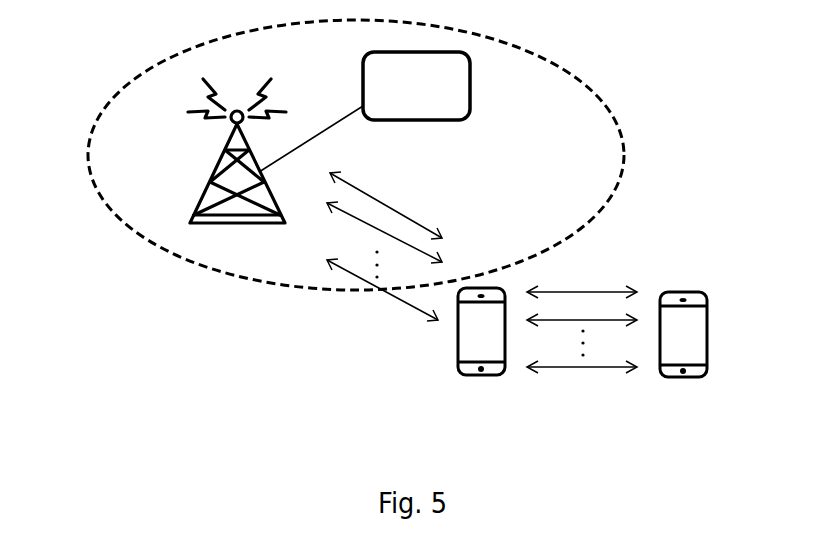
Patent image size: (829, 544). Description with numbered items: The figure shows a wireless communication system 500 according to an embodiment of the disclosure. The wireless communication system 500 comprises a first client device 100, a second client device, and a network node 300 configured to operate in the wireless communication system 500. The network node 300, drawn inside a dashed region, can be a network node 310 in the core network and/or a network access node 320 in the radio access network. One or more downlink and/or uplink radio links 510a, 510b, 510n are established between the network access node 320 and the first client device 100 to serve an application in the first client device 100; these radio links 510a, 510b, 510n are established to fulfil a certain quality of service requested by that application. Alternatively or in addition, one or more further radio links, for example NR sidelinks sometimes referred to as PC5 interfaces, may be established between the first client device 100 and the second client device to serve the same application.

The wireless communication system 500 is at (658, 57).
The network node 300 is at (88, 122).
The network node in the core network 310 is at (364, 112).
The network access node 320 is at (237, 227).
The first client device 100 is at (473, 377).
The downlink and/or uplink radio link 510a is at (386, 192).
The downlink and/or uplink radio link 510b is at (432, 204).
The downlink and/or uplink radio link 510n is at (472, 233).